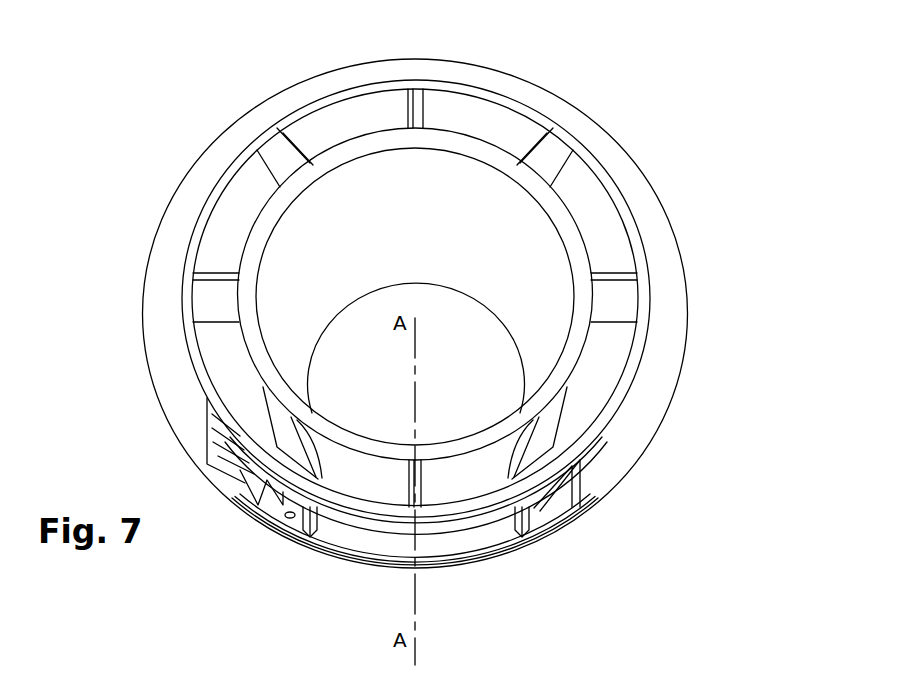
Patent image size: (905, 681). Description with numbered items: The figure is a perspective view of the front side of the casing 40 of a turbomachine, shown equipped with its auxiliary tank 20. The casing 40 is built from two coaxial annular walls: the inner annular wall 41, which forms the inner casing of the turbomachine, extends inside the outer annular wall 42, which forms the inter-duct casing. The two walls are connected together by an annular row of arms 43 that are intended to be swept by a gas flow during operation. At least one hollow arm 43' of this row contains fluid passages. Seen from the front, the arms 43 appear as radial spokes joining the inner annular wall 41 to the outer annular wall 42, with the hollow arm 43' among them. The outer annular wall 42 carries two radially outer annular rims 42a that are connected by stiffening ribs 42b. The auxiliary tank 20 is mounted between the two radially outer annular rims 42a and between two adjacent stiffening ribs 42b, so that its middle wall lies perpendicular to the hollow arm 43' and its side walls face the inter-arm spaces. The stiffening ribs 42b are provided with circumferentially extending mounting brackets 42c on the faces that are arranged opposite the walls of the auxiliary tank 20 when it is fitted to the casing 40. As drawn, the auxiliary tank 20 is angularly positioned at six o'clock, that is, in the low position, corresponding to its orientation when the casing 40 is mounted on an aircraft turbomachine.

The auxiliary tank 20 is at (439, 538).
The casing 40 is at (726, 165).
The inner annular wall 41 is at (455, 183).
The outer annular wall 42 is at (563, 120).
The radially outer annular rims 42a is at (367, 522).
The stiffening ribs 42b is at (283, 523).
The mounting brackets 42c is at (318, 538).
The arms 43 is at (361, 298).
The hollow arm 43' is at (508, 432).